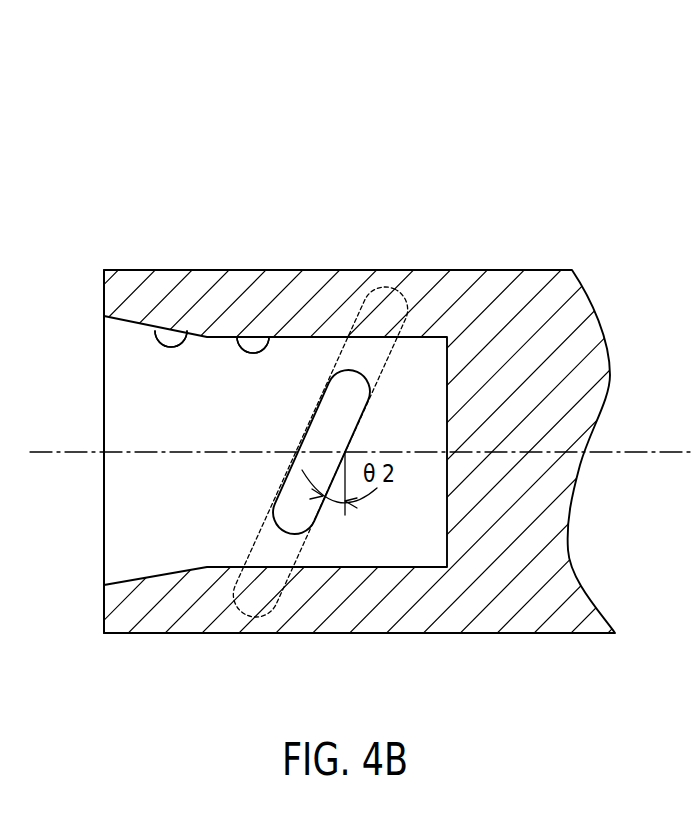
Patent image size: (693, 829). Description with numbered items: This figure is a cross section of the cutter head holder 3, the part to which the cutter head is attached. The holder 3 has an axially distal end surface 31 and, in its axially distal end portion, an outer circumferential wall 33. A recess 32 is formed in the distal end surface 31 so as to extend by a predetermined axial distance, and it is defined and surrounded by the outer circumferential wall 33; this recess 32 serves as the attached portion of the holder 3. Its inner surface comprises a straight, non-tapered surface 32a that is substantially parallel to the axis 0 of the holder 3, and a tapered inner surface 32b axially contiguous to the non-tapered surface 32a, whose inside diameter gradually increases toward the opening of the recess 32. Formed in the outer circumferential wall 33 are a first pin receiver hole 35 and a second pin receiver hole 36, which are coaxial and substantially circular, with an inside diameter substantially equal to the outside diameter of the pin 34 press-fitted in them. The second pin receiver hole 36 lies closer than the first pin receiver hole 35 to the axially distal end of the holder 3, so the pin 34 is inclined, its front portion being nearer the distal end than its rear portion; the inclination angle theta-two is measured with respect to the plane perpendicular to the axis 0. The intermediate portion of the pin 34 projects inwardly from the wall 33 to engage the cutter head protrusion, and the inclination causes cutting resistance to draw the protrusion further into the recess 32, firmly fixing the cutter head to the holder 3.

The cutter head holder 3 is at (507, 182).
The axially distal end surface 31 is at (103, 292).
The recess 32 is at (350, 200).
The non-tapered surface 32a is at (267, 337).
The tapered inner surface 32b is at (188, 335).
The outer circumferential wall 33 is at (348, 277).
The pin 34 is at (305, 437).
The first pin receiver hole 35 is at (421, 295).
The second pin receiver hole 36 is at (265, 612).
The axis 0 is at (657, 452).